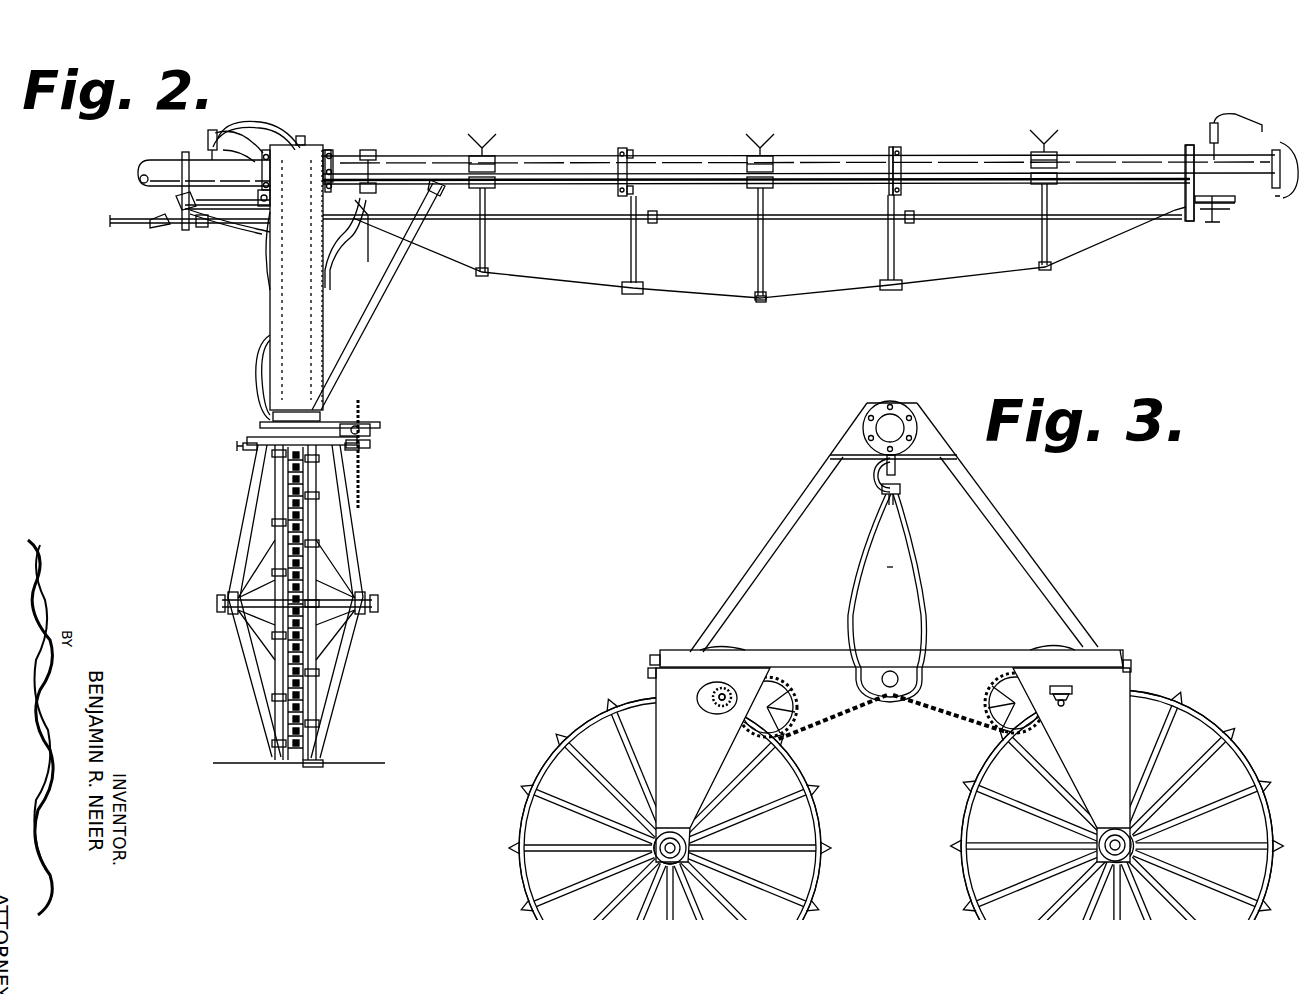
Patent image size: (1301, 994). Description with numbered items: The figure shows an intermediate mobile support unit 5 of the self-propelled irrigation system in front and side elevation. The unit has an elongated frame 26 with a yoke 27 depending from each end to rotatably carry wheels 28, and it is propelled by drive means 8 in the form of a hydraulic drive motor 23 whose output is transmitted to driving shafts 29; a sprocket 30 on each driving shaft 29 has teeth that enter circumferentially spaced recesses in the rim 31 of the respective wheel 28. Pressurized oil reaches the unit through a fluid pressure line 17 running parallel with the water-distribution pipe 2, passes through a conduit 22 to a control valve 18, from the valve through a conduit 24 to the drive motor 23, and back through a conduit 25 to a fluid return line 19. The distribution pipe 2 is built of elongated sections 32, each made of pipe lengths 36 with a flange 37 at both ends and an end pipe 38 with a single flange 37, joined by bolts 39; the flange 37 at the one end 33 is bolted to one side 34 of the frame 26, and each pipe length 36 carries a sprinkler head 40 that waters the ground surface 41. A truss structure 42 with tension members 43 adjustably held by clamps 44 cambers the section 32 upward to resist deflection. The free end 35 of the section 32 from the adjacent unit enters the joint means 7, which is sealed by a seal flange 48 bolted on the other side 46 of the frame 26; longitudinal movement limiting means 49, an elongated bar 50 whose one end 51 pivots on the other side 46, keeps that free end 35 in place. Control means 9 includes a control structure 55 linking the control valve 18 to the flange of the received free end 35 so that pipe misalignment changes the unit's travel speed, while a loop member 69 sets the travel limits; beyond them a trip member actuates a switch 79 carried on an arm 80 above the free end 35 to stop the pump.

In FIG. 2, the water-distribution pipe 2 is at (928, 162).
In FIG. 3, the water-distribution pipe 2 is at (905, 416).
In FIG. 2, the intermediate mobile support unit 5 is at (328, 152).
In FIG. 3, the intermediate mobile support unit 5 is at (1118, 645).
In FIG. 2, the joint means 7 is at (310, 144).
In FIG. 3, the joint means 7 is at (866, 410).
In FIG. 2, the drive means 8 is at (352, 424).
In FIG. 3, the drive means 8 is at (868, 688).
In FIG. 2, the control means 9 is at (230, 211).
In FIG. 2, the fluid pressure line 17 is at (820, 220).
In FIG. 3, the fluid pressure line 17 is at (884, 500).
In FIG. 3, the control valve 18 is at (897, 462).
In FIG. 3, the fluid return line 19 is at (900, 490).
In FIG. 3, the conduit 22 is at (874, 482).
In FIG. 2, the hydraulic drive motor 23 is at (362, 442).
In FIG. 3, the hydraulic drive motor 23 is at (896, 700).
In FIG. 3, the conduit 24 is at (850, 604).
In FIG. 3, the conduit 25 is at (924, 630).
In FIG. 2, the frame 26 is at (296, 411).
In FIG. 3, the frame 26 is at (822, 650).
In FIG. 2, the yoke 27 is at (230, 560).
In FIG. 3, the yoke 27 is at (1080, 786).
In FIG. 2, the wheel 28 is at (275, 728).
In FIG. 3, the wheel 28 is at (545, 758).
In FIG. 2, the driving shaft 29 is at (262, 444).
In FIG. 3, the driving shaft 29 is at (722, 703).
In FIG. 3, the sprocket 30 is at (710, 692).
In FIG. 2, the rim 31 is at (305, 650).
In FIG. 3, the rim 31 is at (520, 878).
In FIG. 2, the elongated section 32 is at (565, 154).
In FIG. 2, the one end 33 is at (350, 158).
In FIG. 2, the one side 34 is at (370, 200).
In FIG. 2, the free end 35 is at (172, 160).
In FIG. 2, the pipe length 36 is at (910, 150).
In FIG. 2, the flange 37 is at (634, 158).
In FIG. 2, the end pipe 38 is at (1240, 195).
In FIG. 2, the bolt 39 is at (636, 175).
In FIG. 2, the sprinkler head 40 is at (495, 130).
In FIG. 2, the ground surface 41 is at (347, 763).
In FIG. 2, the truss structure 42 is at (760, 302).
In FIG. 2, the tension member 43 is at (998, 275).
In FIG. 2, the clamp 44 is at (890, 290).
In FIG. 3, the other side 46 is at (850, 442).
In FIG. 2, the seal flange 48 is at (258, 150).
In FIG. 2, the longitudinal movement limiting means 49 is at (185, 228).
In FIG. 2, the elongated bar 50 is at (234, 226).
In FIG. 2, the one end 51 is at (268, 203).
In FIG. 2, the control structure 55 is at (212, 210).
In FIG. 2, the loop member 69 is at (262, 170).
In FIG. 2, the switch 79 is at (208, 138).
In FIG. 2, the arm 80 is at (236, 138).